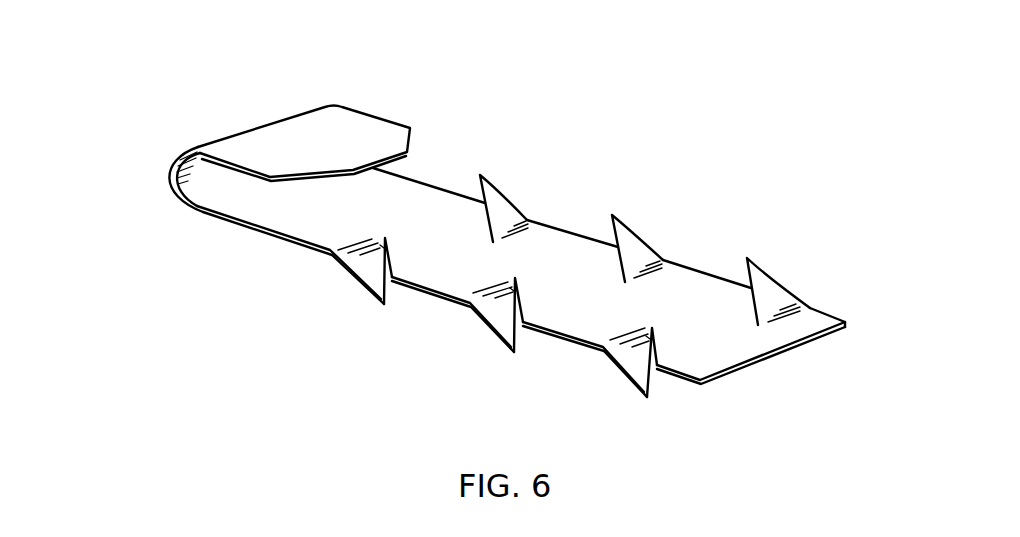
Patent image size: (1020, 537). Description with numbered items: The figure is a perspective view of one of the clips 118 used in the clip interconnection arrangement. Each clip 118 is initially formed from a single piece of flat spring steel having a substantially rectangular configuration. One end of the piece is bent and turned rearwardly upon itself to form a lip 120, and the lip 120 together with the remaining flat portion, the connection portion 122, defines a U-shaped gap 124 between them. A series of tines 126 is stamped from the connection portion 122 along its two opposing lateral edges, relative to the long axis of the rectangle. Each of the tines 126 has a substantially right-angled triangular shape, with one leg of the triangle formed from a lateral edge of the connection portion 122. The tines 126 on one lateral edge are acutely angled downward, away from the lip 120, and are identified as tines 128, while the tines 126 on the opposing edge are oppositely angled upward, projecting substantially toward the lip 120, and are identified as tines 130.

The clip 118 is at (635, 103).
The lip 120 is at (354, 125).
The connection portion 122 is at (295, 224).
The U-shaped gap 124 is at (205, 187).
The tines 126 is at (523, 194).
The downwardly angled tines 128 is at (373, 270).
The upwardly angled tines 130 is at (490, 190).